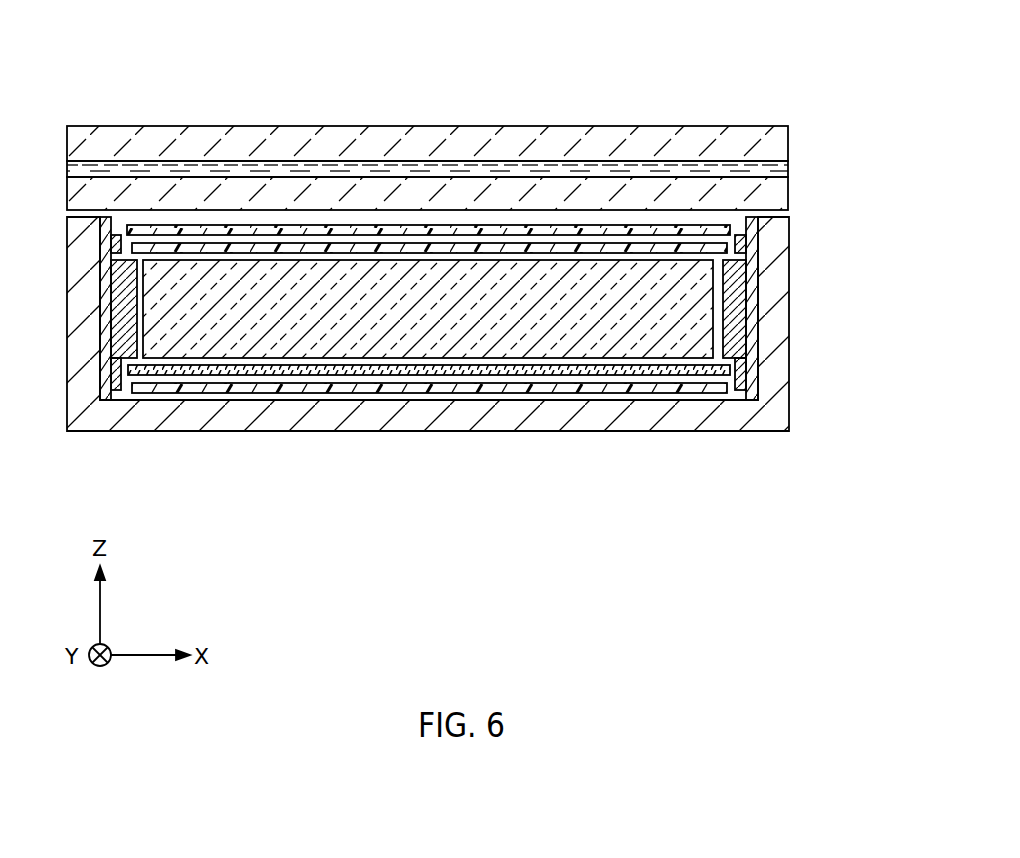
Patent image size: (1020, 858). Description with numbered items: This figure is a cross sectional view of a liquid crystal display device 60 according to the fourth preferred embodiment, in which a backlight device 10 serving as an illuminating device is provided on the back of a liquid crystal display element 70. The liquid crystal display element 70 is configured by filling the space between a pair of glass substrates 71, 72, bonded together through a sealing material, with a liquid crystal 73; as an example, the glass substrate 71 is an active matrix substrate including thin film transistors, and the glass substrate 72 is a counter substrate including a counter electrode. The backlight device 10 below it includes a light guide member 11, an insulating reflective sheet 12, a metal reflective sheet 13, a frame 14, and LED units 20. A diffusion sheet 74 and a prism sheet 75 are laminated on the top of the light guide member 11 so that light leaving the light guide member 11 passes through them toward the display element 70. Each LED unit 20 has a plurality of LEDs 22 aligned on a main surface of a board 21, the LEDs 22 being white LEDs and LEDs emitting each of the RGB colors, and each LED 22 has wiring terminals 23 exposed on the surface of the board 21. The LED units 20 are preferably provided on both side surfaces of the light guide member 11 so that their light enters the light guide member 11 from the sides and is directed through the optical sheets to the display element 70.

The liquid crystal display device 60 is at (644, 90).
The liquid crystal display element 70 is at (840, 124).
The glass substrate 71 is at (742, 142).
The glass substrate 72 is at (442, 188).
The liquid crystal 73 is at (392, 170).
The diffusion sheet 74 is at (257, 247).
The prism sheet 75 is at (300, 233).
The backlight device 10 is at (840, 216).
The light guide member 11 is at (515, 345).
The insulating reflective sheet 12 is at (360, 370).
The metal reflective sheet 13 is at (425, 388).
The frame 14 is at (780, 251).
The LED unit 20 is at (812, 520).
The board 21 is at (753, 393).
The LED 22 is at (717, 352).
The wiring terminal 23 is at (741, 388).